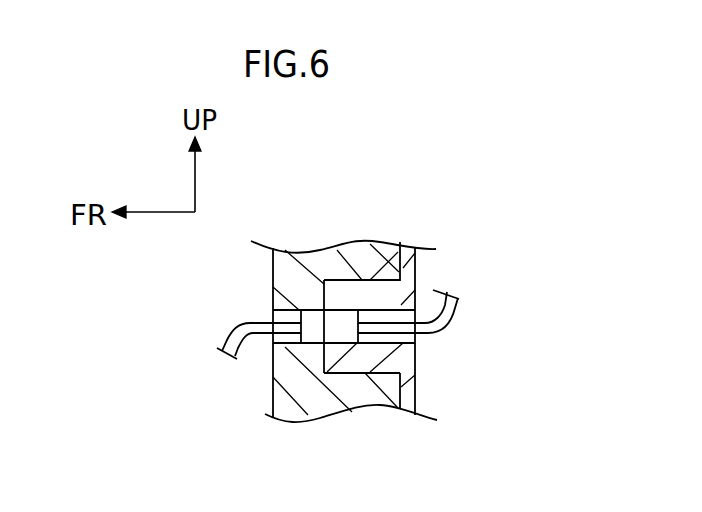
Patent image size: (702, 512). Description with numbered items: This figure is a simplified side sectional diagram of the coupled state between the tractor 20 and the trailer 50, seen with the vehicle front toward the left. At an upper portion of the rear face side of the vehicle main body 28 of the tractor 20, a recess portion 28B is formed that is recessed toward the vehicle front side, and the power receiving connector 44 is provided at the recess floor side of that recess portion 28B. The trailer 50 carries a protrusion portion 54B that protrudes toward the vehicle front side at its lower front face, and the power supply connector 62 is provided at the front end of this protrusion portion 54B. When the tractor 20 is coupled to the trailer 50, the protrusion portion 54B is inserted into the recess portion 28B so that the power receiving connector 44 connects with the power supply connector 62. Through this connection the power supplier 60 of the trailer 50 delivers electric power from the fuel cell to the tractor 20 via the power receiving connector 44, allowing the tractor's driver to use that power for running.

The tractor 20 is at (344, 294).
The vehicle main body 28 is at (320, 238).
The recess portion 28B is at (330, 363).
The power receiving connector 44 is at (315, 312).
The trailer 50 is at (413, 237).
The protrusion portion 54B is at (323, 350).
The power supplier 60 is at (458, 336).
The power supply connector 62 is at (342, 318).